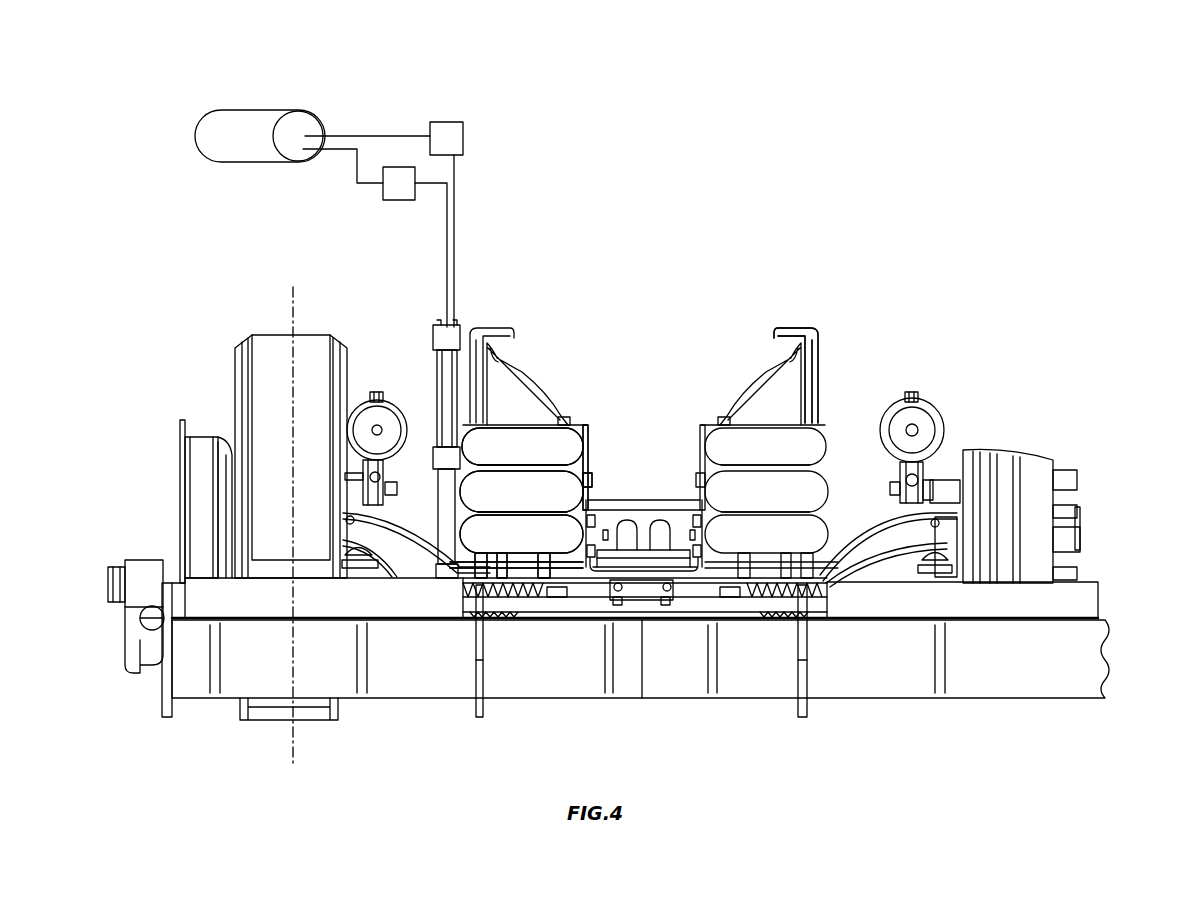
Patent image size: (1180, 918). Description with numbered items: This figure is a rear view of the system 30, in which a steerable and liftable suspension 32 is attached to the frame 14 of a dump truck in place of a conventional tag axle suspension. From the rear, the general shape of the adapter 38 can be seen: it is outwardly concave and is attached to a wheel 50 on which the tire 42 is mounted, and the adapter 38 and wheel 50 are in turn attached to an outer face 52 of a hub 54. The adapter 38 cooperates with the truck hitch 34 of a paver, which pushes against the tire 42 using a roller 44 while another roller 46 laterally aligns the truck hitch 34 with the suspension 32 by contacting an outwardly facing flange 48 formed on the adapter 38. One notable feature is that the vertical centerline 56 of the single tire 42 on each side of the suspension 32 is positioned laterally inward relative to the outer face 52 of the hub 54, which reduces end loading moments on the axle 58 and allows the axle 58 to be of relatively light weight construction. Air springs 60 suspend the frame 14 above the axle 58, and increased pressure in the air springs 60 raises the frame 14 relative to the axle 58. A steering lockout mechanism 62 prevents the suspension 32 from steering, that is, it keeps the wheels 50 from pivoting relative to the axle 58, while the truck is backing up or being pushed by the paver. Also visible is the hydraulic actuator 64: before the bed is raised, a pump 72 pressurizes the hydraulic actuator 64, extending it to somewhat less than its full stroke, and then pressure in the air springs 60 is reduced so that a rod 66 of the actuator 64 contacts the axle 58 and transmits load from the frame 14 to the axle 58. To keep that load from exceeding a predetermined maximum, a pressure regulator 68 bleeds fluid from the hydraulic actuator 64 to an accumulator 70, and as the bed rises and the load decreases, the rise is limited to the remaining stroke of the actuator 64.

The frame 14 is at (788, 328).
The system 30 is at (597, 332).
The suspension 32 is at (847, 393).
The truck hitch 34 is at (587, 698).
The adapter 38 is at (208, 437).
The tire 42 is at (338, 348).
The roller 44 is at (345, 605).
The roller 46 is at (155, 560).
The flange 48 is at (180, 427).
The wheel 50 is at (235, 453).
The outer face 52 is at (1067, 533).
The hub 54 is at (1038, 458).
The vertical centerline 56 is at (297, 300).
The axle 58 is at (885, 512).
The air springs 60 is at (700, 460).
The steering lockout mechanism 62 is at (643, 533).
The hydraulic actuator 64 is at (433, 362).
The rod 66 is at (422, 512).
The pressure regulator 68 is at (463, 136).
The accumulator 70 is at (218, 110).
The pump 72 is at (383, 194).